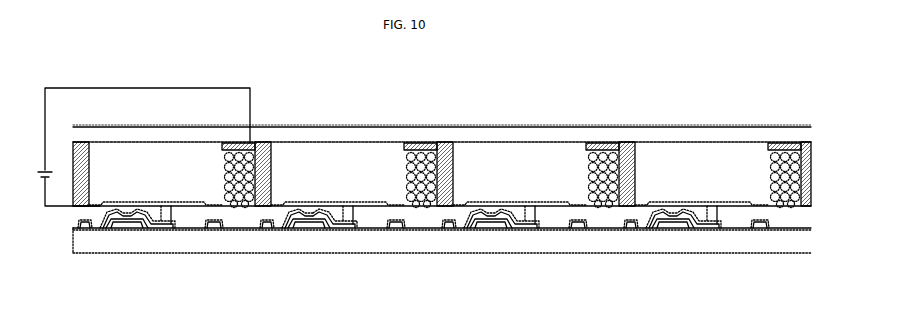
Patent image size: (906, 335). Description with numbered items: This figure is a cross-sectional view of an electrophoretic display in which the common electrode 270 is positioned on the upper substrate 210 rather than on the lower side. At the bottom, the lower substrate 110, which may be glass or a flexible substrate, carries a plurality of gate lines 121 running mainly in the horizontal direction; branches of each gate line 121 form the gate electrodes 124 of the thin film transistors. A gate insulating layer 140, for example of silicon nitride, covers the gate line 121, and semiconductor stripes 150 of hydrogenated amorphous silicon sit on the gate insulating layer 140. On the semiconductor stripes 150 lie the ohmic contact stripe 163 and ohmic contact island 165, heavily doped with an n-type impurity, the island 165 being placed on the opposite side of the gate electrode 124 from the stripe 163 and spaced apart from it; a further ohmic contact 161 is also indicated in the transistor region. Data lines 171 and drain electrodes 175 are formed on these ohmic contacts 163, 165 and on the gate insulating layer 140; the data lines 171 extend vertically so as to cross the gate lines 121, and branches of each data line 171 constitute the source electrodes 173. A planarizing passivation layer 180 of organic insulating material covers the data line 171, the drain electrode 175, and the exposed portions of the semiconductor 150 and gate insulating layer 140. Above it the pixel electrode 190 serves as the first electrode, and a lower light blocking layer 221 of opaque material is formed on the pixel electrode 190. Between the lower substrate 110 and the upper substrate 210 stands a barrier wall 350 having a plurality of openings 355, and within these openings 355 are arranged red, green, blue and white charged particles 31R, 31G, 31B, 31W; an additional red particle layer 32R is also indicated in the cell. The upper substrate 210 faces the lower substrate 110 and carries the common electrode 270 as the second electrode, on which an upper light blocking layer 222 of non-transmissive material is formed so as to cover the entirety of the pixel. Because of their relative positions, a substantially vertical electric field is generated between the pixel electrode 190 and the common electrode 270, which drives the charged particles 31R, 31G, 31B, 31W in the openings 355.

The lower substrate 110 is at (175, 247).
The gate line 121 is at (215, 232).
The gate electrode 124 is at (307, 232).
The gate insulating layer 140 is at (148, 232).
The semiconductor stripe 150 is at (312, 233).
The contact electrode 161 is at (437, 232).
The ohmic contact stripe 163 is at (298, 232).
The ohmic contact island 165 is at (317, 237).
The data line 171 is at (465, 232).
The source electrode 173 is at (293, 232).
The drain electrode 175 is at (358, 235).
The passivation layer 180 is at (415, 215).
The pixel electrode 190 is at (125, 205).
The upper substrate 210 is at (503, 136).
The lower light blocking layer 221 is at (168, 206).
The upper light blocking layer 222 is at (228, 143).
The common electrode 270 is at (410, 143).
The barrier wall 350 is at (262, 150).
The opening 355 is at (95, 158).
The white charged particles 31W is at (233, 205).
The red charged particles 31R is at (247, 205).
The green charged particles 31G is at (420, 160).
The blue charged particles 31B is at (598, 150).
The red color conversion member 32R is at (608, 205).